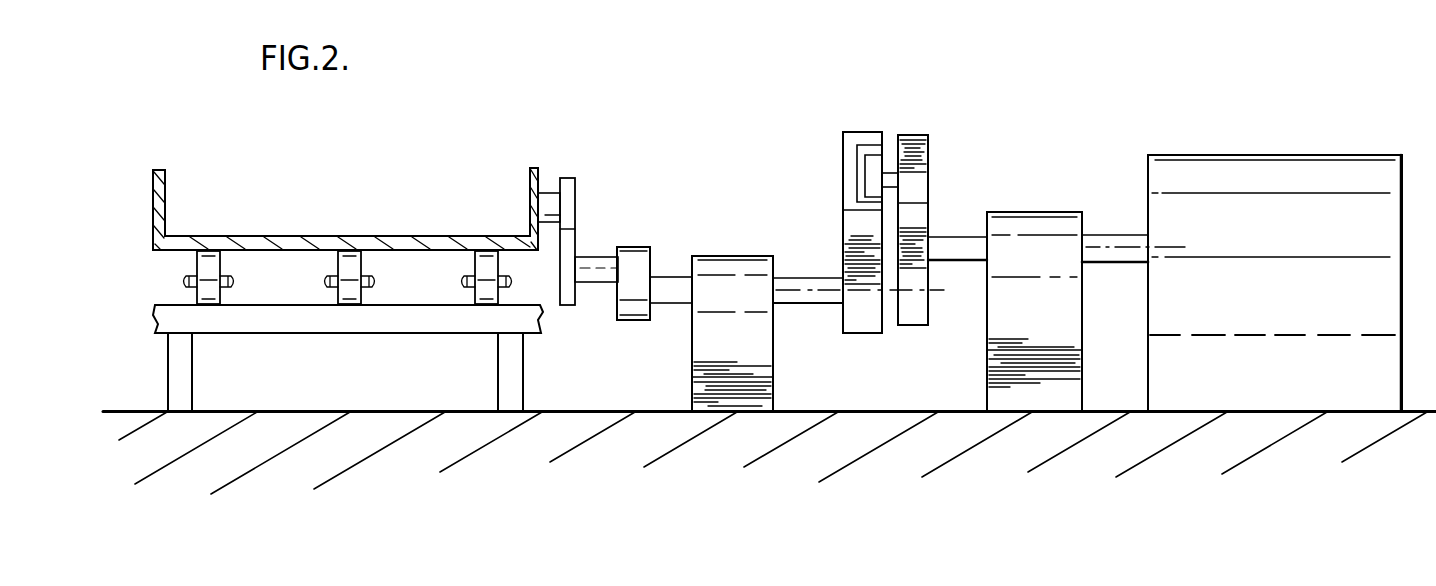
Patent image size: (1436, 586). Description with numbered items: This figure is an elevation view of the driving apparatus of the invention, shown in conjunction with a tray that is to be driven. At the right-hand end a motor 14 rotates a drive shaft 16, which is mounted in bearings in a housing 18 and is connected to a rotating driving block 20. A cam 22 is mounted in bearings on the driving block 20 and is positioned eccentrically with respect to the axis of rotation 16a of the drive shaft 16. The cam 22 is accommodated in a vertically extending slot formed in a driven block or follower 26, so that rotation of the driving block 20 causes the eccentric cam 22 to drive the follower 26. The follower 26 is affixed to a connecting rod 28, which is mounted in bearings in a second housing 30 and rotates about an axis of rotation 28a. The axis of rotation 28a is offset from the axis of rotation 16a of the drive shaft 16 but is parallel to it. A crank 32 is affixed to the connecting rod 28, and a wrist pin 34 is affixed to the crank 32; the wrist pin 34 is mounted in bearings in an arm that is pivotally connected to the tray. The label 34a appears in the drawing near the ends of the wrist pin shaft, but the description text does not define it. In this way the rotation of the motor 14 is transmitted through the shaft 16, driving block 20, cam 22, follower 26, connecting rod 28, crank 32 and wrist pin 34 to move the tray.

The motor 14 is at (1262, 155).
The drive shaft 16 is at (1120, 235).
The axis of rotation of the drive shaft 16a is at (1062, 248).
The housing 18 is at (1031, 212).
The driving block 20 is at (913, 325).
The cam 22 is at (892, 172).
The follower 26 is at (843, 228).
The connecting rod 28 is at (812, 305).
The axis of rotation of the connecting rod 28a is at (768, 290).
The housing 30 is at (749, 256).
The crank 32 is at (641, 247).
The wrist pin 34 is at (599, 257).
The shaft end 34a is at (559, 268).